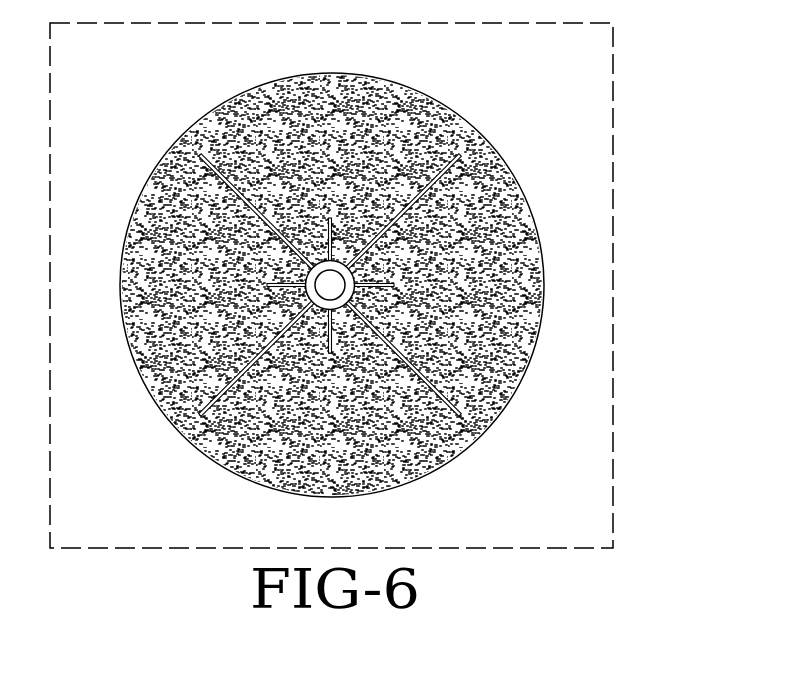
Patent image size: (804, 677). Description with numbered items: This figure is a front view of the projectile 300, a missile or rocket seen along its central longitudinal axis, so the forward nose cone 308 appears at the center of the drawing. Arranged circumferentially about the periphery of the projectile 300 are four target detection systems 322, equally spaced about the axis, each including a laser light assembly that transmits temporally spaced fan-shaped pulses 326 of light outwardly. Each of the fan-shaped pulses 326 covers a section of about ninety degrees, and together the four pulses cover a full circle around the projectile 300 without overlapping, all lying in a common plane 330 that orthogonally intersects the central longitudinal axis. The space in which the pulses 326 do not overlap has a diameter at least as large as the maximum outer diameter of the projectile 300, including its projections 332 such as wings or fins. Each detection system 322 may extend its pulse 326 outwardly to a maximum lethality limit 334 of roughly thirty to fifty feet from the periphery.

The projectile 300 is at (362, 270).
The forward nose cone 308 is at (330, 287).
The target detection systems 322 is at (370, 300).
The fan-shaped pulses 326 is at (277, 443).
The common plane 330 is at (613, 273).
The projections 332 is at (317, 268).
The maximum lethality limit 334 is at (508, 165).